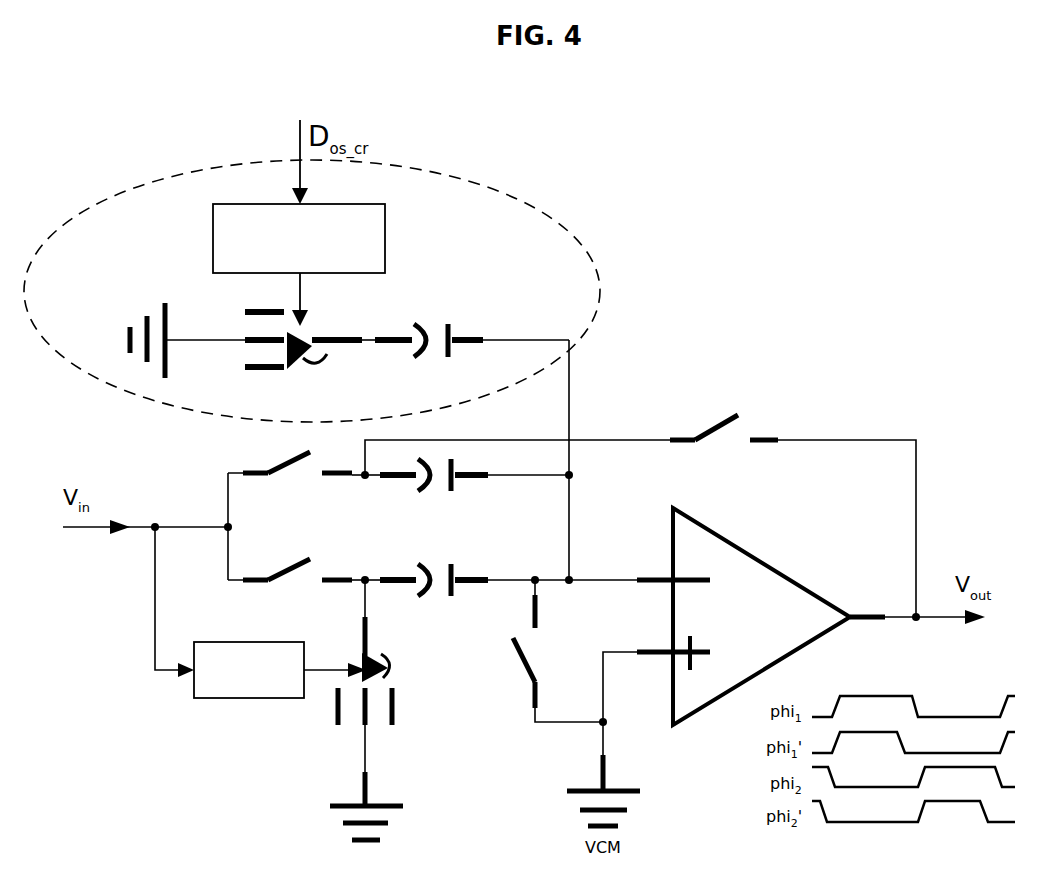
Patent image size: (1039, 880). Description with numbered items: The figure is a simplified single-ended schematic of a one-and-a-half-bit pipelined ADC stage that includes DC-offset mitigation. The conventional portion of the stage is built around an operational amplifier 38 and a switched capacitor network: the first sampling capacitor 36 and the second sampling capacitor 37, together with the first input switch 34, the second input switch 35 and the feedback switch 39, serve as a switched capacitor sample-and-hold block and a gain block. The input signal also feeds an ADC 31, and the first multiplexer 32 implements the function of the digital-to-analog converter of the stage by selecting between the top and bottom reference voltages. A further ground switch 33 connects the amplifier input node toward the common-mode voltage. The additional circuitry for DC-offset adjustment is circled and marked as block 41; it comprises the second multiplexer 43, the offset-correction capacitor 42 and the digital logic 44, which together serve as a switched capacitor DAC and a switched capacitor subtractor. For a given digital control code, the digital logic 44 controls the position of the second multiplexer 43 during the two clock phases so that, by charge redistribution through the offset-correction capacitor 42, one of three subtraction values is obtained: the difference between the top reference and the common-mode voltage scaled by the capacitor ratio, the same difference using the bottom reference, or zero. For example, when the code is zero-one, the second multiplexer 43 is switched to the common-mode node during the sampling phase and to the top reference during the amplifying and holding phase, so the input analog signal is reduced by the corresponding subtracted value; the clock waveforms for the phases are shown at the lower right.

The ADC 31 is at (229, 635).
The multiplexer MUX1 32 is at (368, 725).
The switch SWg1 33 is at (546, 653).
The switch SWi1 34 is at (280, 475).
The switch SWi2 35 is at (290, 577).
The capacitor Cs1 36 is at (427, 491).
The capacitor Cs2 37 is at (427, 595).
The operational amplifier 38 is at (761, 616).
The switch SWf1 39 is at (724, 425).
The DC-offset mitigation circuit block 41 is at (557, 226).
The capacitor Cos_cr 42 is at (483, 339).
The multiplexer MUX2 43 is at (305, 352).
The digital logic 44 is at (385, 248).